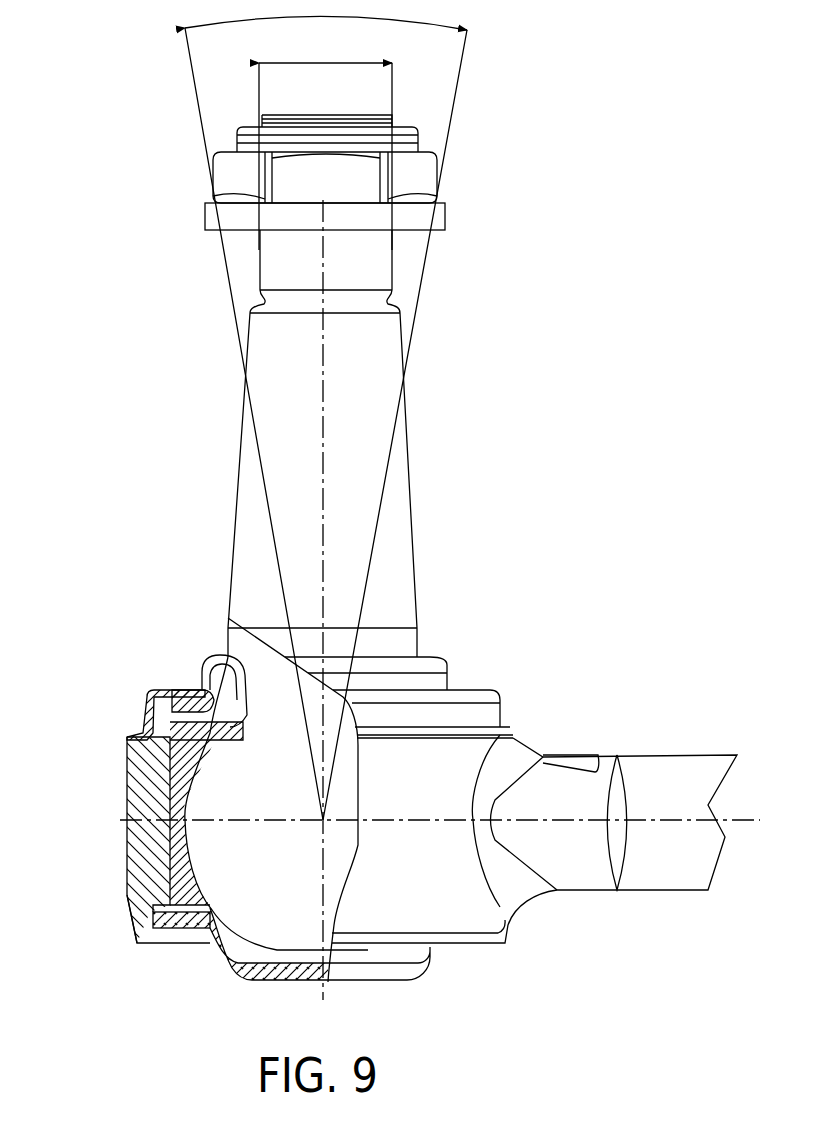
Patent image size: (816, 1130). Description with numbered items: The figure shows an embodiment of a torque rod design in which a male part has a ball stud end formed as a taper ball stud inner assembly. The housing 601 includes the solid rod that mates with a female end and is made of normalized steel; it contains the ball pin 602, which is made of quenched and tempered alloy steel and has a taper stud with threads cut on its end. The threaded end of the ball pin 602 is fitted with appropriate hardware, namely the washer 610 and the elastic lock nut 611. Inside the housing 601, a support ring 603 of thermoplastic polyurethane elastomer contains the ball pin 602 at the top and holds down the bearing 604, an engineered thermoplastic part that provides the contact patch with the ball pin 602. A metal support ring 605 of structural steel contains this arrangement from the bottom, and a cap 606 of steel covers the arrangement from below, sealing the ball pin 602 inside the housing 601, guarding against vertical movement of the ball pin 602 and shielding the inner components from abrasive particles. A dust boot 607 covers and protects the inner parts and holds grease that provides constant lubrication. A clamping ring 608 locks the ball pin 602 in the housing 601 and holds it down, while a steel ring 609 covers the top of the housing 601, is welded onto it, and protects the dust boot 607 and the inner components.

The housing 601 is at (127, 853).
The ball pin 602 is at (252, 465).
The support ring (TPU) 603 is at (172, 743).
The bearing 604 is at (173, 790).
The support ring (metal) 605 is at (180, 898).
The cap 606 is at (212, 958).
The dust boot 607 is at (207, 653).
The clamping ring 608 is at (220, 697).
The ring 609 is at (140, 728).
The washer 610 is at (210, 215).
The elastic lock nut 611 is at (235, 165).